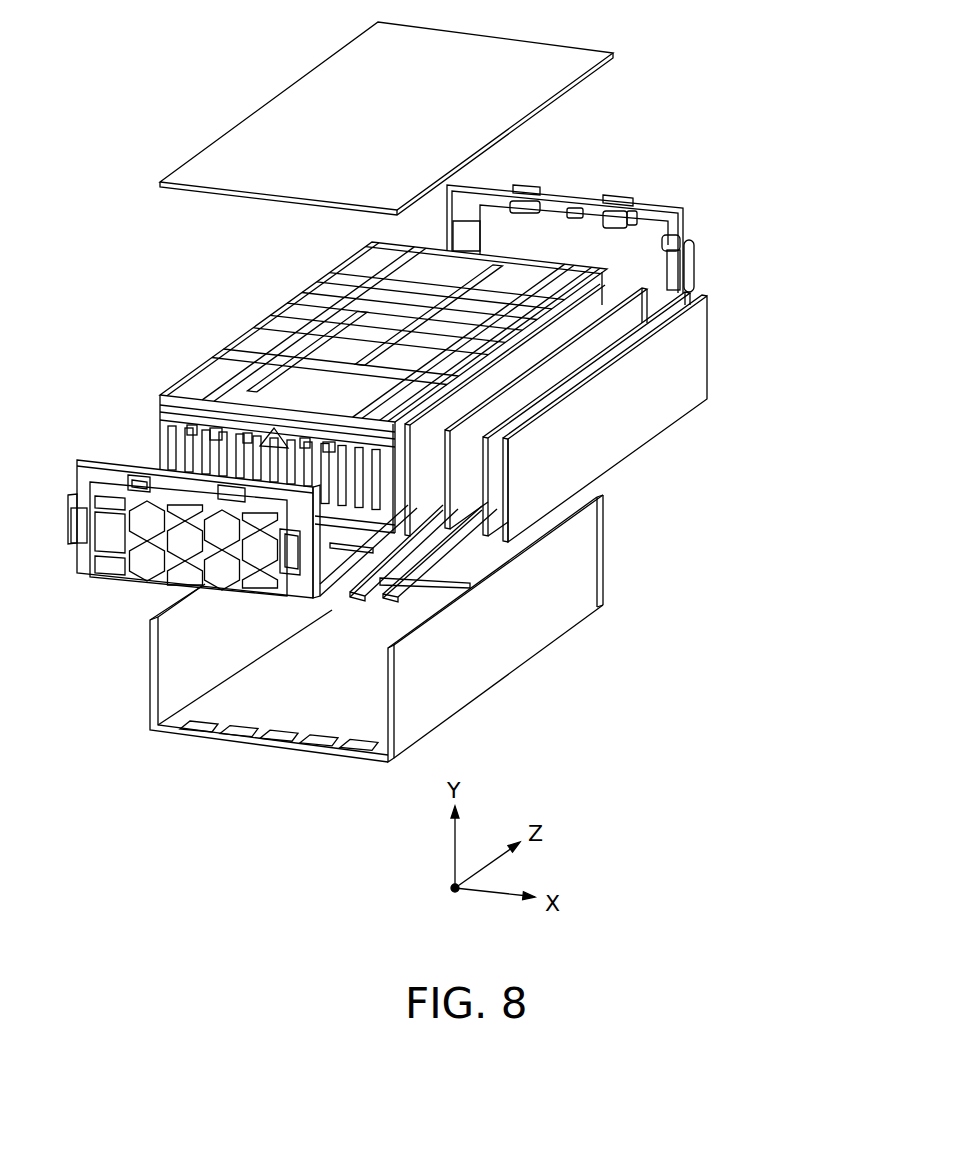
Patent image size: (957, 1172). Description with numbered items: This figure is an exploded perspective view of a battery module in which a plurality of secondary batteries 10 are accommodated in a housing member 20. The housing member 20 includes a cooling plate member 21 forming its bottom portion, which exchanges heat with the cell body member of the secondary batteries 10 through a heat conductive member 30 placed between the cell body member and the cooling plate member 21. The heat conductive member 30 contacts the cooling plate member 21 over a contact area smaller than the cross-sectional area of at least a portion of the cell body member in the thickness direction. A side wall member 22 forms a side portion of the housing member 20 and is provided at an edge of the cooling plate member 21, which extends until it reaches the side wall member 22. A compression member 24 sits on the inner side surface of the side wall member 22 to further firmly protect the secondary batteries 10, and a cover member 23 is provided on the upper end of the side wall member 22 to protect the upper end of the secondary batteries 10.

The secondary battery 10 is at (258, 308).
The housing member 20 is at (808, 193).
The cooling plate member 21 is at (330, 708).
The side wall member 22 is at (580, 572).
The cover member 23 is at (513, 100).
The compression member 24 is at (675, 366).
The heat conductive member 30 is at (352, 597).